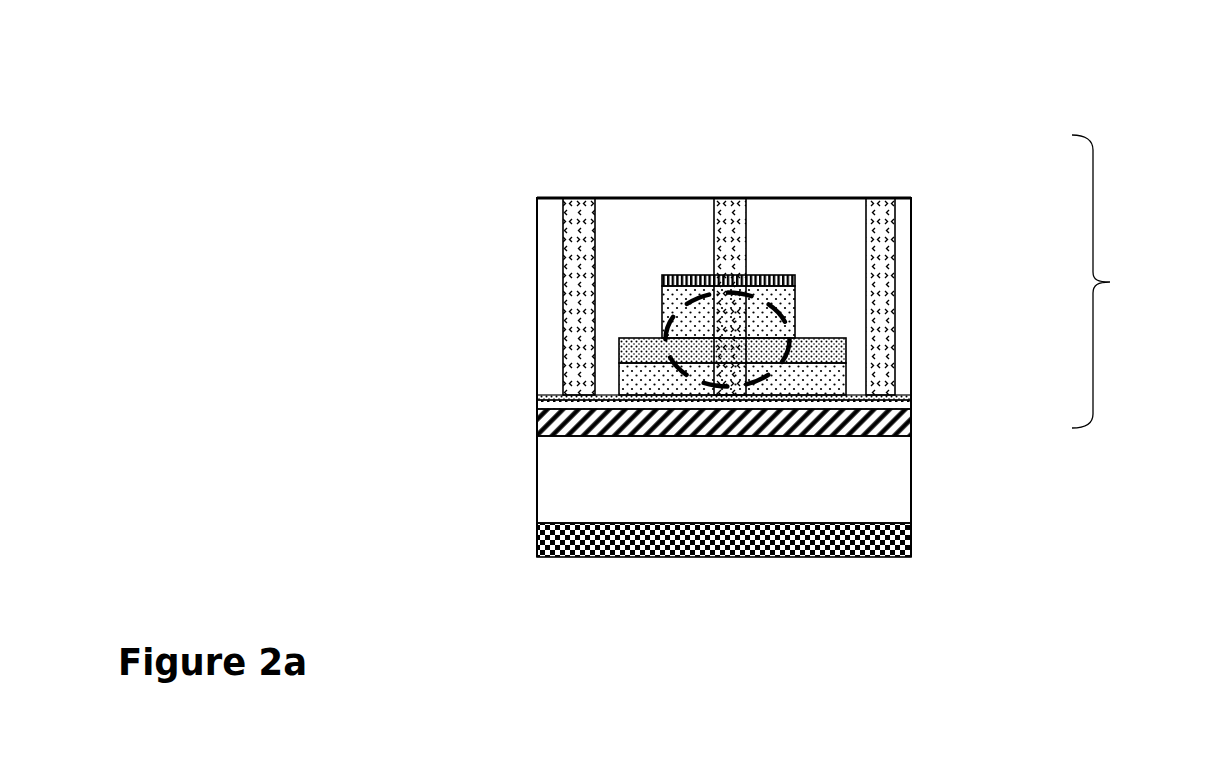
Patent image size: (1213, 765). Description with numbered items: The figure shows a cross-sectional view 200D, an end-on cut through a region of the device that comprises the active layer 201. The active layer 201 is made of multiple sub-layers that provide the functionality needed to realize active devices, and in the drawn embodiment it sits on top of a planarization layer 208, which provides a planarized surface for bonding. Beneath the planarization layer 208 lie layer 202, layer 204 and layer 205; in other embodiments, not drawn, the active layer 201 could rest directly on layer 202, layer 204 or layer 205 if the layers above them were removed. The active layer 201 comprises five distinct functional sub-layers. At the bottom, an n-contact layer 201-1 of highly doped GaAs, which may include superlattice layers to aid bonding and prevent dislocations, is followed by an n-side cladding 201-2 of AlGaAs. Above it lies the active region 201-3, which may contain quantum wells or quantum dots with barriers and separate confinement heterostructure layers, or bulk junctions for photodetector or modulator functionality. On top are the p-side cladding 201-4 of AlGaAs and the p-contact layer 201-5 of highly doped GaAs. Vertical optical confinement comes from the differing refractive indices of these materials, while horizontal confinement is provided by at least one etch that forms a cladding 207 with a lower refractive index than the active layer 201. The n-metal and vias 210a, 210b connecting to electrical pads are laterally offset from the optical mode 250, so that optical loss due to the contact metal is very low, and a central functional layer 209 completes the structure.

The cross-sectional view 200D is at (190, 102).
The active layer 201 is at (1124, 281).
The n-contact layer 201-1 is at (911, 398).
The n-side cladding 201-2 is at (846, 383).
The active region 201-3 is at (846, 350).
The p-side cladding 201-4 is at (795, 311).
The p-contact layer 201-5 is at (795, 279).
The layer 202 is at (537, 424).
The layer 204 is at (537, 470).
The layer 205 is at (537, 540).
The cladding 207 is at (537, 283).
The planarization layer 208 is at (537, 405).
The functional layer 209 is at (730, 198).
The n-contact metal and via 210a is at (582, 198).
The n-contact metal and via 210b is at (880, 198).
The optical mode 250 is at (685, 305).